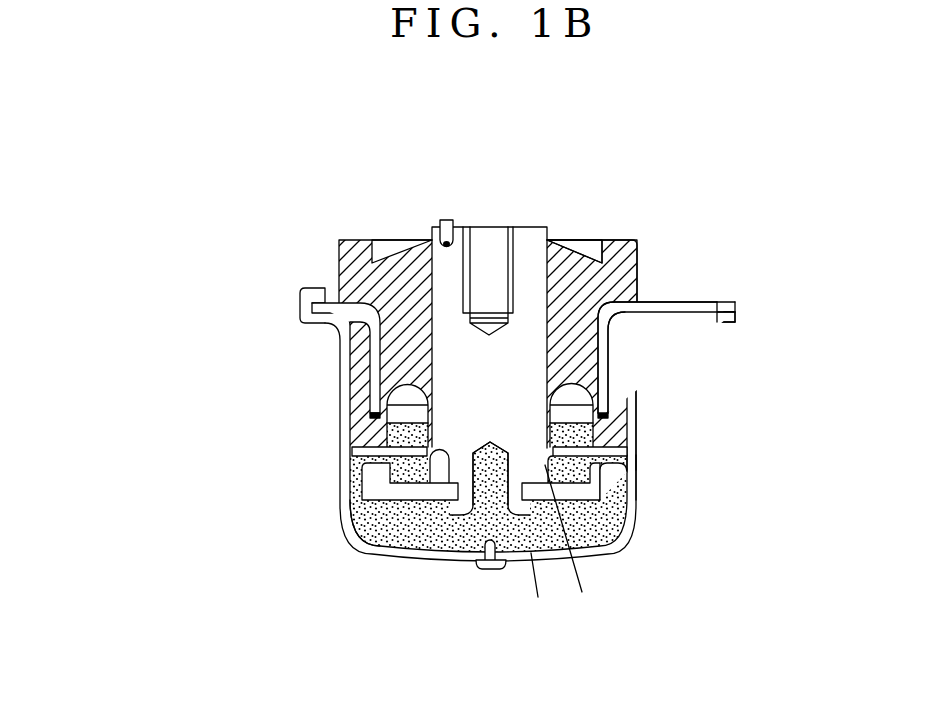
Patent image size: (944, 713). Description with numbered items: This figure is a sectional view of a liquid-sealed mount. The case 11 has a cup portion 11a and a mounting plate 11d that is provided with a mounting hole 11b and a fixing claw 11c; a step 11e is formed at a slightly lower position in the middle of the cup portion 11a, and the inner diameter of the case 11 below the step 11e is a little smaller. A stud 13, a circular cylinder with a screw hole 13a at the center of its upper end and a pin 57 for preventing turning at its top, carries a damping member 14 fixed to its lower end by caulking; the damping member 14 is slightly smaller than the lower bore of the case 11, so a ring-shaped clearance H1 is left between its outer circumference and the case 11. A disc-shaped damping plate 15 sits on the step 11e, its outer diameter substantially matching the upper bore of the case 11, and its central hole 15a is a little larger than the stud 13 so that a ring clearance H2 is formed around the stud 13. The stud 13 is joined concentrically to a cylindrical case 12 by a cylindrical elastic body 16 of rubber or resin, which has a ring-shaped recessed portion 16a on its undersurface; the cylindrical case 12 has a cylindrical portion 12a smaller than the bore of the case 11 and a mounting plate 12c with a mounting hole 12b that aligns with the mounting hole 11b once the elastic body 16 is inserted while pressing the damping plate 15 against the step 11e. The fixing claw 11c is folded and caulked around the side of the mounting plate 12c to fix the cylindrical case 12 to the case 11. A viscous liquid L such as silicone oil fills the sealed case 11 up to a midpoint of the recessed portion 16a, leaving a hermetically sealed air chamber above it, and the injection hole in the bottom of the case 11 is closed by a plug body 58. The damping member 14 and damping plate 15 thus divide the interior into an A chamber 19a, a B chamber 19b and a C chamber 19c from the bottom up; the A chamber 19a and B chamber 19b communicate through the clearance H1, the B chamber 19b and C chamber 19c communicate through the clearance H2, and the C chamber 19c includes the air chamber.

The case 11 is at (632, 527).
The cup portion 11a is at (634, 427).
The mounting hole 11b is at (697, 323).
The fixing claw 11c is at (313, 288).
The mounting plate 11d is at (678, 323).
The step 11e is at (637, 462).
The cylindrical case 12 is at (606, 311).
The cylindrical portion 12a is at (604, 388).
The mounting hole 12b is at (698, 302).
The mounting plate 12c is at (683, 300).
The stud 13 is at (536, 240).
The screw hole 13a is at (507, 238).
The damping member 14 is at (614, 530).
The damping plate 15 is at (407, 455).
The hole 15a is at (435, 518).
The cylindrical elastic body 16 is at (630, 272).
The recessed portion 16a is at (377, 408).
The A chamber 19a is at (380, 518).
The B chamber 19b is at (390, 477).
The C chamber 19c is at (362, 447).
The pin 57 is at (443, 219).
The plug body 58 is at (493, 571).
The ring-shaped clearance H1 is at (623, 477).
The ring clearance H2 is at (579, 543).
The viscous liquid L is at (540, 592).